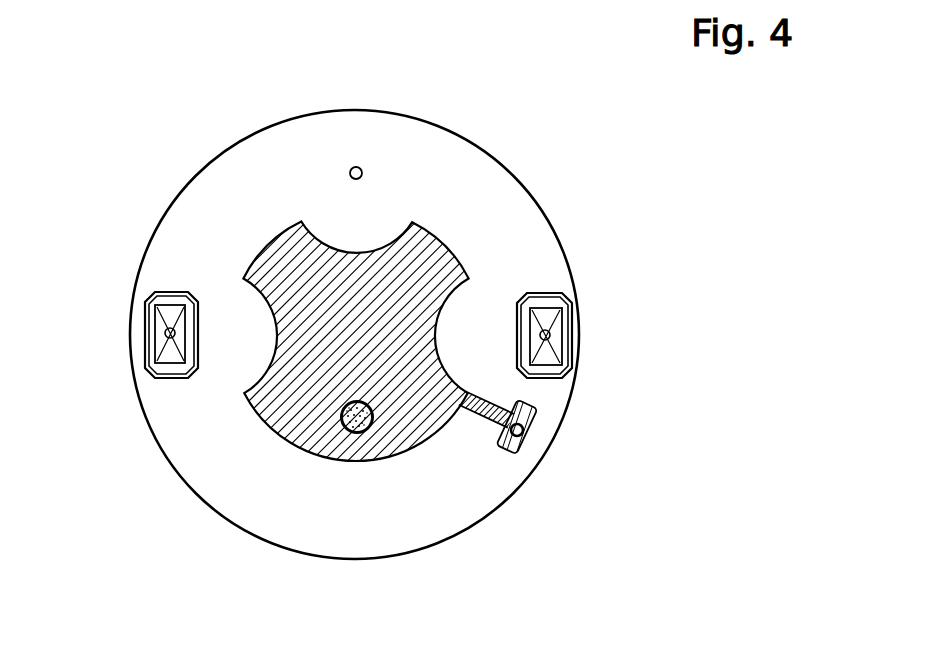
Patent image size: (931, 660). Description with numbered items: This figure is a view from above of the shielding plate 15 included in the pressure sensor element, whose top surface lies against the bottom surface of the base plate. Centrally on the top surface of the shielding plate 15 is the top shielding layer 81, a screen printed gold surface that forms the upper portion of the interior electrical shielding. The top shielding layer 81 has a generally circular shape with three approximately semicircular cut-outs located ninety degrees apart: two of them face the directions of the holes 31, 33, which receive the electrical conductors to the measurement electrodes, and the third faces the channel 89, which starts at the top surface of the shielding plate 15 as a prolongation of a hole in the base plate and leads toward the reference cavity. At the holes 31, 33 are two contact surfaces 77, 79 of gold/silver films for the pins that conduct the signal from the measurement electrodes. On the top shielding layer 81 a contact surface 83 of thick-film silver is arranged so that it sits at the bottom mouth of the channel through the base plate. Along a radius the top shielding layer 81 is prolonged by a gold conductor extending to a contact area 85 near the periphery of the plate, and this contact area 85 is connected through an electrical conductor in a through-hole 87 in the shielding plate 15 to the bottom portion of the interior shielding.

The shielding plate 15 is at (553, 179).
The top shielding layer 81 is at (287, 267).
The channel 89 is at (360, 167).
The contact surface 83 is at (346, 430).
The hole 33 is at (170, 333).
The hole 31 is at (548, 335).
The contact surface 77 is at (662, 318).
The contact surface 79 is at (544, 335).
The contact area 85 is at (528, 410).
The through-hole 87 is at (523, 432).